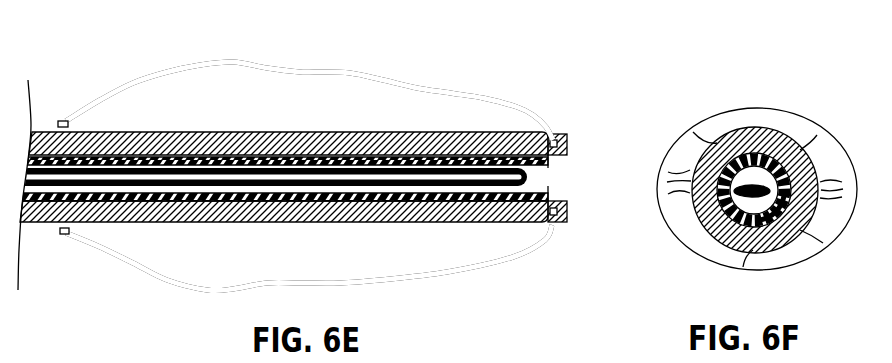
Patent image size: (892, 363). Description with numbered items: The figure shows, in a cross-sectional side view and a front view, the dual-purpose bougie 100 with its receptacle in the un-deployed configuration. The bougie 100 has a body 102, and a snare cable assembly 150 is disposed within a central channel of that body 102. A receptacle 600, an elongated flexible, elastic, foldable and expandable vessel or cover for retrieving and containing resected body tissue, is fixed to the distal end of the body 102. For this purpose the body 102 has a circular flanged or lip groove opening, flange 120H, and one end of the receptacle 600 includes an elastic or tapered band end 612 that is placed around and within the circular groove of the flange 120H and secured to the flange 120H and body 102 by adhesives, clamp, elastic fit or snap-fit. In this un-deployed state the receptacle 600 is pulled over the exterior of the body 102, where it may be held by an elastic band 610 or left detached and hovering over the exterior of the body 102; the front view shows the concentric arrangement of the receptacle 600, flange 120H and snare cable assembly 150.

In FIG. 6E, the bougie 100 is at (558, 82).
In FIG. 6E, the body 102 is at (35, 213).
In FIG. 6E, the flange 120H is at (567, 212).
In FIG. 6F, the flange 120H is at (777, 250).
In FIG. 6E, the snare cable assembly 150 is at (470, 187).
In FIG. 6F, the snare cable assembly 150 is at (752, 186).
In FIG. 6E, the receptacle 600 is at (278, 69).
In FIG. 6F, the receptacle 600 is at (697, 240).
In FIG. 6E, the elastic band 610 is at (63, 120).
In FIG. 6E, the band end 612 is at (554, 223).
In FIG. 6F, the band end 612 is at (777, 150).